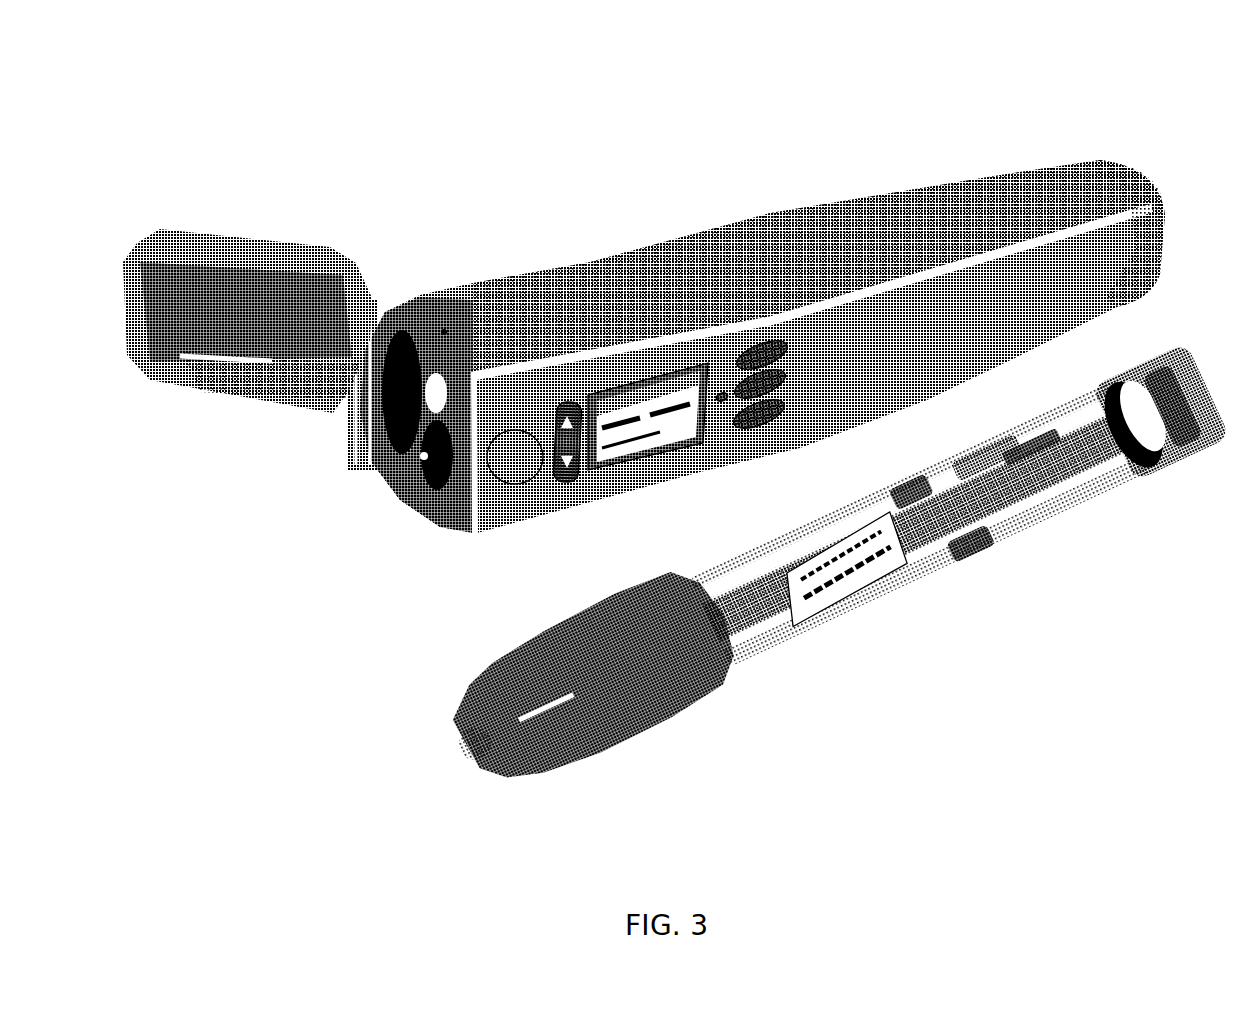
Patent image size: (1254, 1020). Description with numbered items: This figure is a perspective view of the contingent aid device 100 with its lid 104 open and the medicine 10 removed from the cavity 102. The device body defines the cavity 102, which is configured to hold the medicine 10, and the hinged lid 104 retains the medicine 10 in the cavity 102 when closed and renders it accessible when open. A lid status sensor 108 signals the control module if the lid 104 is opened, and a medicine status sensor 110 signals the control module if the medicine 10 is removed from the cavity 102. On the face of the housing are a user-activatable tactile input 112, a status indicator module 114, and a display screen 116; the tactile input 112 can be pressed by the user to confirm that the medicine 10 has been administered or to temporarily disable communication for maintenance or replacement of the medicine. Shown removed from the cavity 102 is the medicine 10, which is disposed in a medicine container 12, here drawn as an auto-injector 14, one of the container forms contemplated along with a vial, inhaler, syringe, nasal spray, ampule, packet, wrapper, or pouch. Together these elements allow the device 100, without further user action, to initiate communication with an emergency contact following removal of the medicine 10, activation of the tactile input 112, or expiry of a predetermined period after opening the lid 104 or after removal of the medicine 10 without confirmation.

The contingent aid device 100 is at (665, 353).
The cavity 102 is at (283, 458).
The lid 104 is at (258, 117).
The lid status sensor 108 is at (283, 604).
The medicine status sensor 110 is at (408, 117).
The user-activatable tactile input 112 is at (452, 57).
The status indicator module 114 is at (688, 117).
The display screen 116 is at (568, 117).
The medicine 10 is at (833, 621).
The medicine container 12 is at (841, 569).
The auto-injector 14 is at (959, 506).